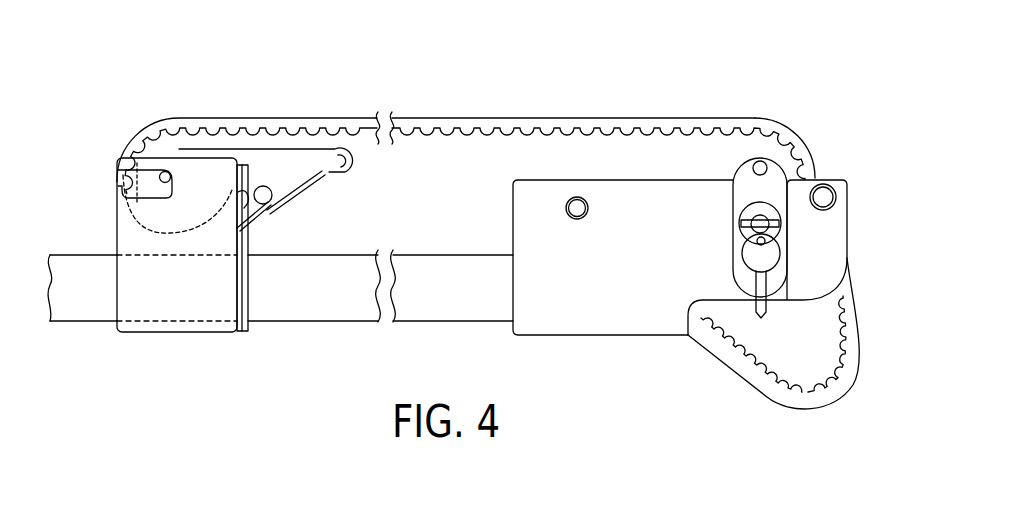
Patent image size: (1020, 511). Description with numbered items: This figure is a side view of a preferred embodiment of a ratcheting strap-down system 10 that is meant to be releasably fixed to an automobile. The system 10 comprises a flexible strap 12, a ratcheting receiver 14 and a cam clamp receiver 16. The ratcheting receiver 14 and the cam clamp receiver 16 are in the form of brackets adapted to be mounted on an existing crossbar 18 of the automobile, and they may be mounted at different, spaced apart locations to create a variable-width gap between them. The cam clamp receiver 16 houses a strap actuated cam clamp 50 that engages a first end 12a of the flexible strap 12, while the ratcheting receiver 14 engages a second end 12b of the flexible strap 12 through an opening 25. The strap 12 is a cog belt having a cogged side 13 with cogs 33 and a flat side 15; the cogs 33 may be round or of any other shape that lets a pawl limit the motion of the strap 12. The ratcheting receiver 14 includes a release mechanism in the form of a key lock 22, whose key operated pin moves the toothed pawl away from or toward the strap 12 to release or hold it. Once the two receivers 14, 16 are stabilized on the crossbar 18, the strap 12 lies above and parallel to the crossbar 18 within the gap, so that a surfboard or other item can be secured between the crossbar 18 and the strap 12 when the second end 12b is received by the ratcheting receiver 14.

The ratcheting strap-down system 10 is at (457, 51).
The flexible strap 12 is at (290, 118).
The first end 12a is at (254, 212).
The second end 12b is at (701, 354).
The cogged side 13 is at (415, 141).
The ratcheting receiver 14 is at (846, 268).
The flat side 15 is at (619, 113).
The cam clamp receiver 16 is at (116, 245).
The crossbar 18 is at (52, 332).
The key lock 22 is at (765, 190).
The opening 25 is at (837, 175).
The cogs 33 is at (265, 128).
The strap actuated cam clamp 50 is at (178, 150).